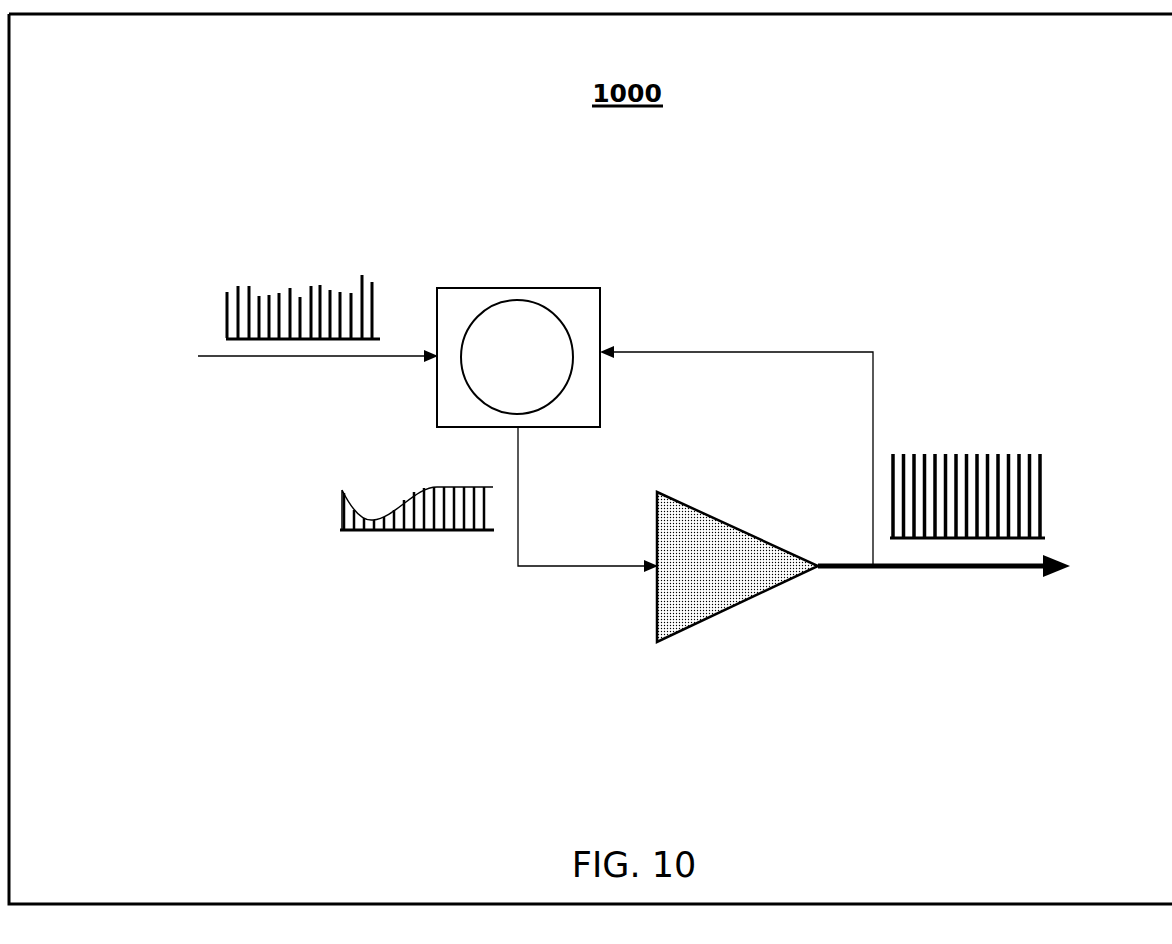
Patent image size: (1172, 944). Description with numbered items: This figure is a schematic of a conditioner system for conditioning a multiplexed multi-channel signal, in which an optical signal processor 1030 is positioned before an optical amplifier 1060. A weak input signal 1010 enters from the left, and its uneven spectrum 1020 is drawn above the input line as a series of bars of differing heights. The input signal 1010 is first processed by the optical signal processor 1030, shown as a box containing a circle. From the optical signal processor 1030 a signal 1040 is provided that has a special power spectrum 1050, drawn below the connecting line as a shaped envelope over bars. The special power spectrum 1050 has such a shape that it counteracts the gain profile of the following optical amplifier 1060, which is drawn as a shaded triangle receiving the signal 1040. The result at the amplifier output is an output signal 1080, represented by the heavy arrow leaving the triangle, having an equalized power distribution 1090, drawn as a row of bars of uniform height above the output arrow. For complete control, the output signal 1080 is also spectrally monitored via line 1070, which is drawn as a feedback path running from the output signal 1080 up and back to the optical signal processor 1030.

The input signal 1010 is at (305, 356).
The uneven spectrum 1020 is at (305, 303).
The optical signal processor 1030 is at (543, 353).
The signal 1040 is at (517, 545).
The special power spectrum 1050 is at (395, 532).
The optical amplifier 1060 is at (678, 600).
The line 1070 is at (800, 352).
The output signal 1080 is at (945, 568).
The equalized power distribution 1090 is at (967, 478).